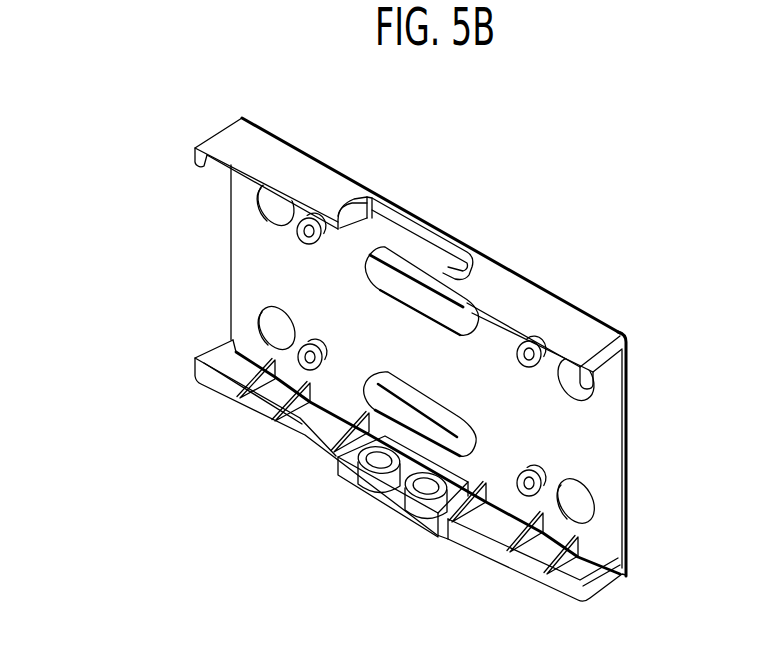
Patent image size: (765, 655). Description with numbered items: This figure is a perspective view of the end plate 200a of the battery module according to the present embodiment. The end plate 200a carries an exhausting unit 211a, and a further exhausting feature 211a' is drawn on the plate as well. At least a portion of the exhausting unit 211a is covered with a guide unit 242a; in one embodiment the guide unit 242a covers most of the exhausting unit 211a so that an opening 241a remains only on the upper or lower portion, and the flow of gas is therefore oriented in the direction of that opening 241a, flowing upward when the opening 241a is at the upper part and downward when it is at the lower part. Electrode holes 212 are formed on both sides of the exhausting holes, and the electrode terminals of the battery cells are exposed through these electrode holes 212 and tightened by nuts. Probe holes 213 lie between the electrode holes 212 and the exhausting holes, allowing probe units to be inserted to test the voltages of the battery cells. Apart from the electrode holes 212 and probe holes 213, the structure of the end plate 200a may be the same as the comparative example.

The end plate 200a is at (106, 104).
The exhausting unit 211a is at (408, 253).
The lower bent flange 211a' is at (410, 481).
The electrode holes 212 is at (280, 329).
The probe holes 213 is at (301, 359).
The opening 241a is at (414, 266).
The guide unit 242a is at (381, 268).